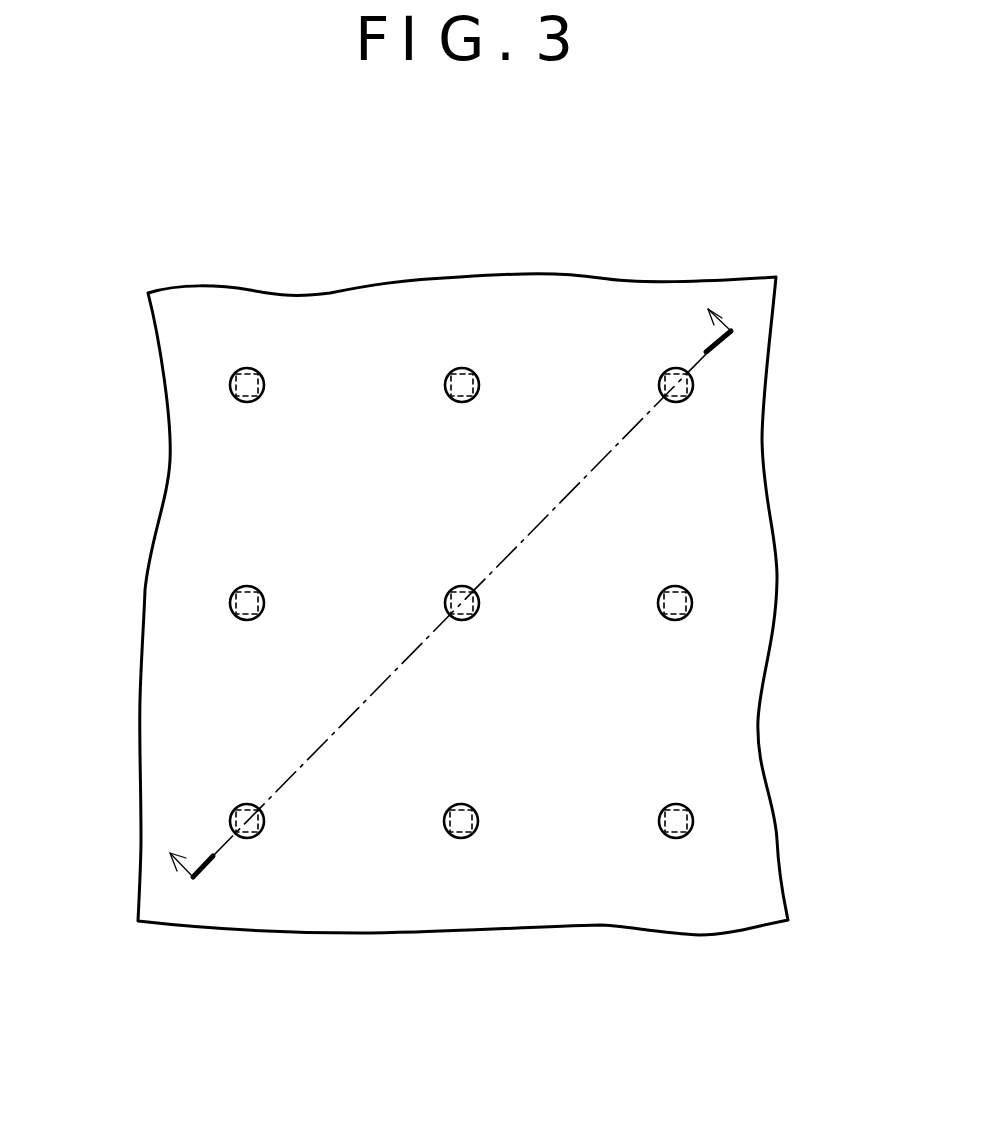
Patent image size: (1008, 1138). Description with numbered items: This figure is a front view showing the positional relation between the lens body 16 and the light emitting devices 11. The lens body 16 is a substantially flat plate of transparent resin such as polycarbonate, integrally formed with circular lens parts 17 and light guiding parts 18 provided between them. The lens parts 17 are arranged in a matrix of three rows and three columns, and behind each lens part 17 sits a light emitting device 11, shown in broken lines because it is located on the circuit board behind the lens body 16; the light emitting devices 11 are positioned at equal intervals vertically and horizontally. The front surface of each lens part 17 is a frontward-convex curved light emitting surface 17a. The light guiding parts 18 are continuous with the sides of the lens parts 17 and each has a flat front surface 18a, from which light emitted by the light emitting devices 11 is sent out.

The lens body 16 is at (598, 300).
The lens part 17 is at (475, 373).
The light emitting surface 17a is at (460, 369).
The light guiding part 18 is at (335, 330).
The front surface 18a is at (387, 330).
The light emitting device 11 is at (247, 368).